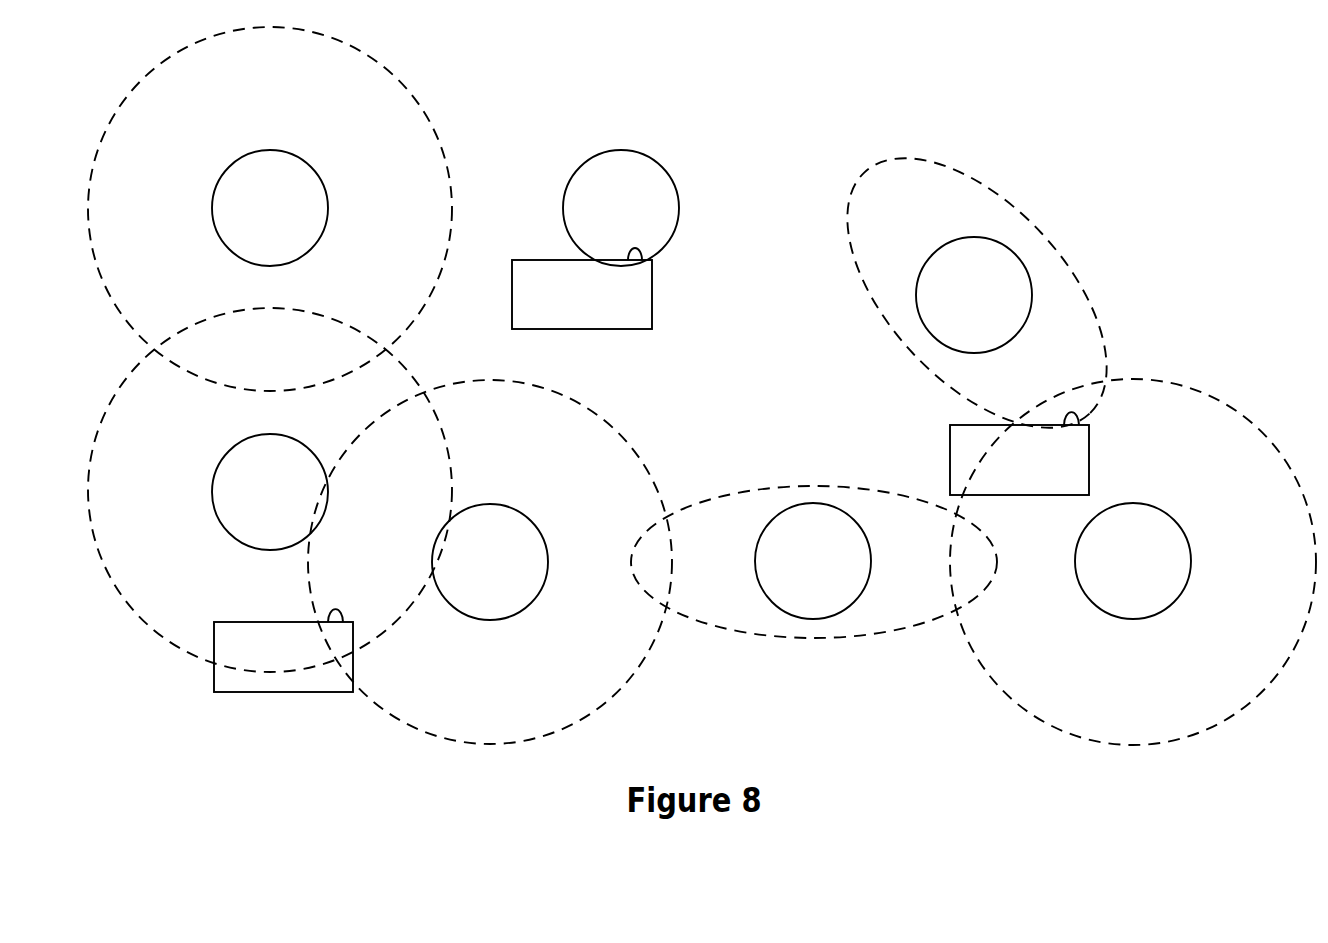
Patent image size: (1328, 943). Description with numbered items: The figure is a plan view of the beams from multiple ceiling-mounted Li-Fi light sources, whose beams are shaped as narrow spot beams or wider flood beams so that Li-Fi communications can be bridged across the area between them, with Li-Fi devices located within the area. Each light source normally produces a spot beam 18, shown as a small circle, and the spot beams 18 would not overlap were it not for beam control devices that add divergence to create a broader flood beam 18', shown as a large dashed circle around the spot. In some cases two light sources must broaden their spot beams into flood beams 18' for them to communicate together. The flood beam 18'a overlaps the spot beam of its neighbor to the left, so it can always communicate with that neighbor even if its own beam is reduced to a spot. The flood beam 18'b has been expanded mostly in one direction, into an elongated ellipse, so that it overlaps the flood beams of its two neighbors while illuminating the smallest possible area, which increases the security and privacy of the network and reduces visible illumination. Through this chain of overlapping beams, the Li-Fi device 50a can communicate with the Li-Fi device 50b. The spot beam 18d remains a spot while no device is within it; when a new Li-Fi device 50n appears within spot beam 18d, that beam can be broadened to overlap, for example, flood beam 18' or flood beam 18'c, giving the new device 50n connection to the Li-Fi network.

The spot beam 18 is at (359, 208).
The flood beam 18' is at (311, 209).
The spot beam 18d is at (662, 165).
The flood beam 18'a is at (490, 537).
The flood beam 18'b is at (814, 503).
The flood beam 18'c is at (1005, 292).
The Li-Fi device 50a is at (313, 676).
The Li-Fi device 50b is at (1037, 488).
The Li-Fi device 50n is at (633, 322).